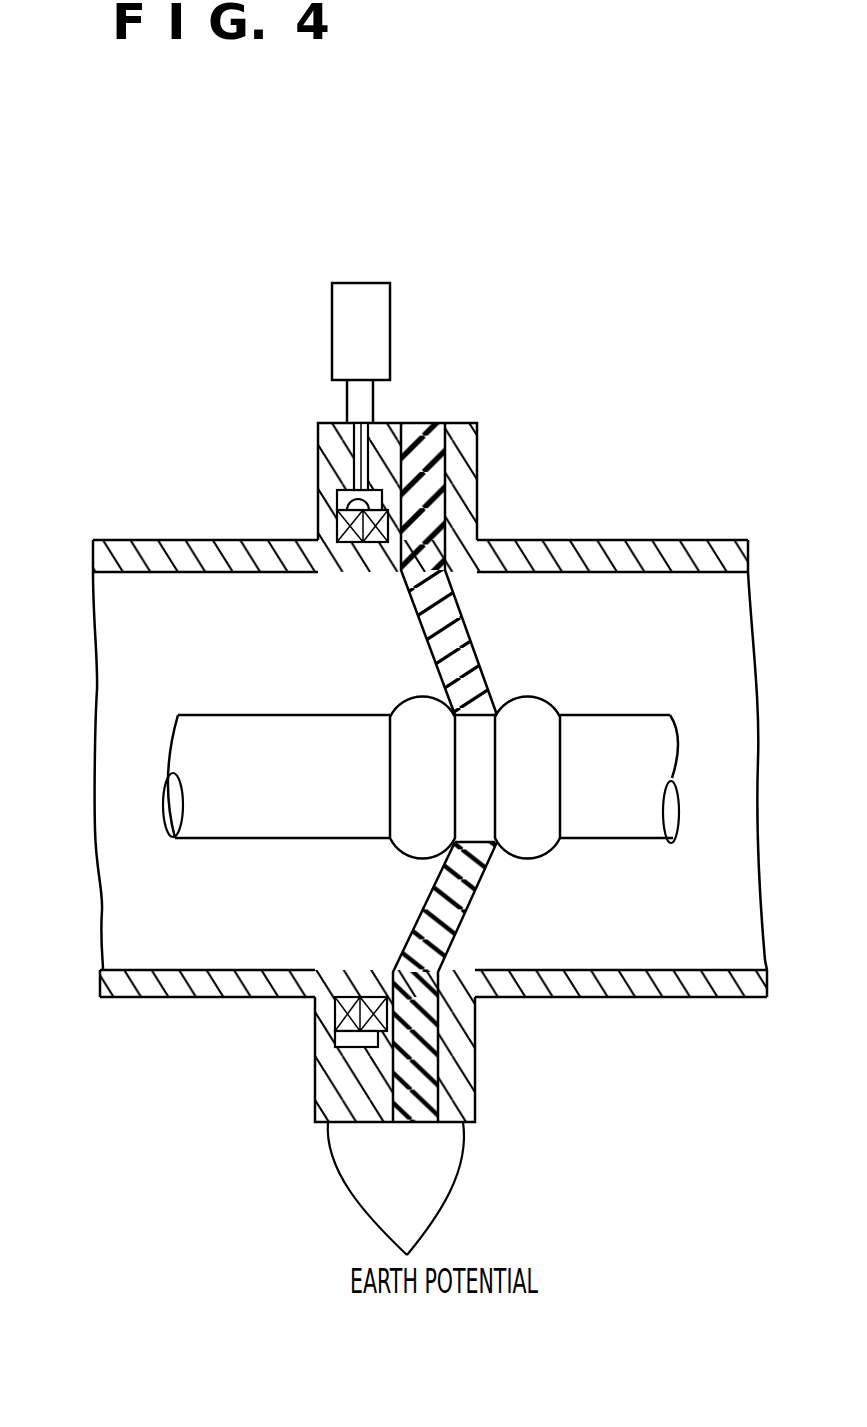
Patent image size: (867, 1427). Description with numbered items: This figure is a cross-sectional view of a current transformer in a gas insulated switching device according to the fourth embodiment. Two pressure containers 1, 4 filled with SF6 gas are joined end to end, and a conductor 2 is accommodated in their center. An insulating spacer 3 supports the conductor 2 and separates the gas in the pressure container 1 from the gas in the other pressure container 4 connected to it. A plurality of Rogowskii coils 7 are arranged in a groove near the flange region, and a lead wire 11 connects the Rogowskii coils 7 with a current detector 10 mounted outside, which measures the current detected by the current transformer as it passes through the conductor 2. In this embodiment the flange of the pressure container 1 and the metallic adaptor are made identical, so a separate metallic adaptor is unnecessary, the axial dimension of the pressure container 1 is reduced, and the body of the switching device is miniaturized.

The pressure container 1 is at (127, 556).
The conductor 2 is at (203, 817).
The insulating spacer 3 is at (425, 453).
The pressure container 4 is at (645, 565).
The Rogowskii coils 7 is at (337, 528).
The current detector 10 is at (372, 313).
The lead wire 11 is at (368, 468).